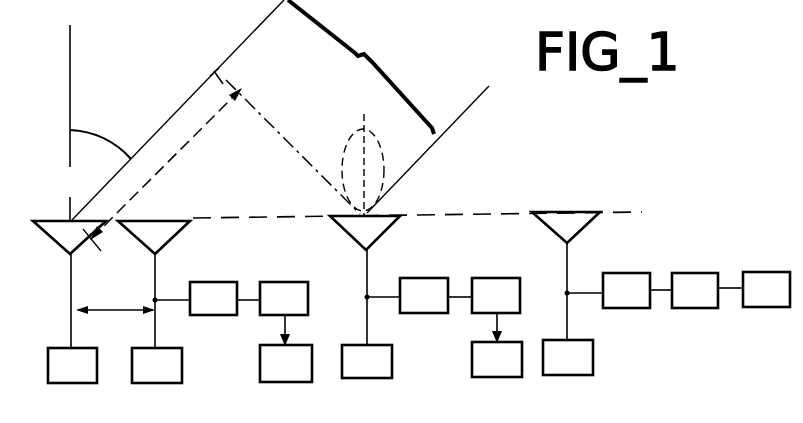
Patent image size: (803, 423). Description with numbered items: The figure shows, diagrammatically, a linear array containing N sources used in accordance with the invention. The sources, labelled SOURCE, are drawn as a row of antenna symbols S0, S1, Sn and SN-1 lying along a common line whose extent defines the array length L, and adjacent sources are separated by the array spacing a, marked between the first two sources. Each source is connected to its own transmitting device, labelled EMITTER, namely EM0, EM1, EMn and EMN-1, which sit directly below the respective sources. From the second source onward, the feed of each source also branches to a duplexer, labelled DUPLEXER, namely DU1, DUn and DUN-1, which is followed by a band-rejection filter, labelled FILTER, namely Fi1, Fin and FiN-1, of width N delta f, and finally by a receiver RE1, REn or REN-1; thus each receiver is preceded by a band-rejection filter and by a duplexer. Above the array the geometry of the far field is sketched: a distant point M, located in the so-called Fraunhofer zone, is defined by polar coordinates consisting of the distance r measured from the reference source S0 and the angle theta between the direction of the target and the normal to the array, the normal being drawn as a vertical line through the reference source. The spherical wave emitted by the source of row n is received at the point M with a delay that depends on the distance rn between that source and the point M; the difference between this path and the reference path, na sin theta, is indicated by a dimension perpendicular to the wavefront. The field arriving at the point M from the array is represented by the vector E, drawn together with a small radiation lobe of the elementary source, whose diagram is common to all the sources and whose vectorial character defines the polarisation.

The source S0 is at (55, 250).
The source S1 is at (134, 247).
The source Sn is at (356, 242).
The source SN-1 is at (562, 239).
The transmitting device EM0 is at (88, 323).
The transmitting device EM1 is at (173, 327).
The transmitting device EMn is at (386, 394).
The transmitting device EMN-1 is at (580, 340).
The duplexer DU1 is at (226, 257).
The duplexer DUn is at (437, 278).
The duplexer DUN-1 is at (633, 262).
The band-rejection filter Fi1 is at (292, 282).
The band-rejection filter Fin is at (503, 255).
The band-rejection filter FiN-1 is at (710, 308).
The receiver RE1 is at (284, 420).
The receiver REn is at (523, 391).
The receiver REN-1 is at (785, 247).
The array length L is at (425, 210).
The distant point M is at (366, 67).
The field at point M E is at (376, 83).
The distance of the target from the reference source r is at (178, 110).
The distance between source of row n and point M rn is at (428, 149).
The array spacing a is at (115, 300).
The path difference na is at (162, 169).
The source SOURCE is at (44, 216).
The band-rejection filter FILTER is at (332, 290).
The duplexer DUPLEXER is at (227, 316).
The transmitting device EMITTER is at (60, 378).